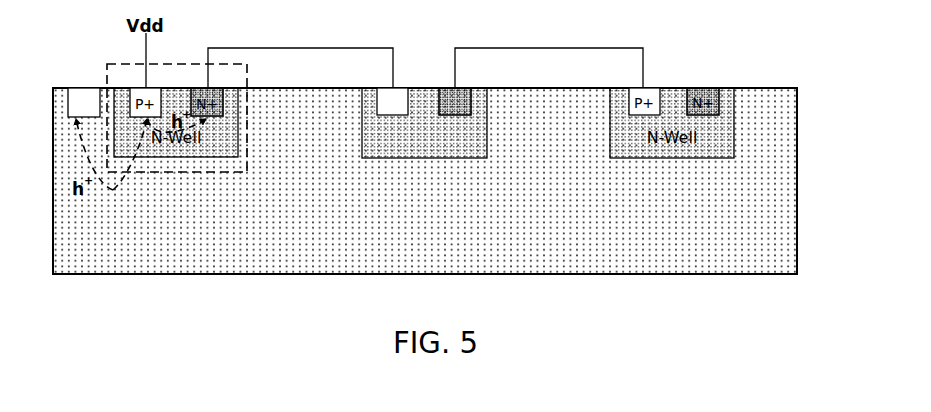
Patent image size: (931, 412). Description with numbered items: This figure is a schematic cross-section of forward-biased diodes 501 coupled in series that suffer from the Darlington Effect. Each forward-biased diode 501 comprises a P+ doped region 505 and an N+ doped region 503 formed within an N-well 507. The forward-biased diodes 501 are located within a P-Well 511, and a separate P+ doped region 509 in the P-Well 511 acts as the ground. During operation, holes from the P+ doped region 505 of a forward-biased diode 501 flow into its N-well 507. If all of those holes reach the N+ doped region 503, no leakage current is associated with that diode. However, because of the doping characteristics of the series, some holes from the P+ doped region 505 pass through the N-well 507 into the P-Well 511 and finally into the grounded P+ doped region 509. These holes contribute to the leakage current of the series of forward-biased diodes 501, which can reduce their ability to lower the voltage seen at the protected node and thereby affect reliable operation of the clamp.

The forward-biased diode 501 is at (248, 76).
The N+ doped region 503 is at (462, 88).
The P+ doped region 505 is at (396, 88).
The N-well 507 is at (487, 127).
The separate P+ doped region 509 is at (85, 88).
The P-Well 511 is at (797, 158).